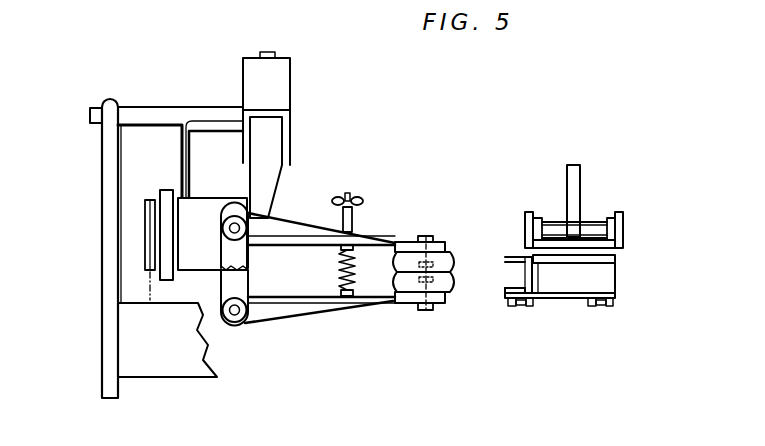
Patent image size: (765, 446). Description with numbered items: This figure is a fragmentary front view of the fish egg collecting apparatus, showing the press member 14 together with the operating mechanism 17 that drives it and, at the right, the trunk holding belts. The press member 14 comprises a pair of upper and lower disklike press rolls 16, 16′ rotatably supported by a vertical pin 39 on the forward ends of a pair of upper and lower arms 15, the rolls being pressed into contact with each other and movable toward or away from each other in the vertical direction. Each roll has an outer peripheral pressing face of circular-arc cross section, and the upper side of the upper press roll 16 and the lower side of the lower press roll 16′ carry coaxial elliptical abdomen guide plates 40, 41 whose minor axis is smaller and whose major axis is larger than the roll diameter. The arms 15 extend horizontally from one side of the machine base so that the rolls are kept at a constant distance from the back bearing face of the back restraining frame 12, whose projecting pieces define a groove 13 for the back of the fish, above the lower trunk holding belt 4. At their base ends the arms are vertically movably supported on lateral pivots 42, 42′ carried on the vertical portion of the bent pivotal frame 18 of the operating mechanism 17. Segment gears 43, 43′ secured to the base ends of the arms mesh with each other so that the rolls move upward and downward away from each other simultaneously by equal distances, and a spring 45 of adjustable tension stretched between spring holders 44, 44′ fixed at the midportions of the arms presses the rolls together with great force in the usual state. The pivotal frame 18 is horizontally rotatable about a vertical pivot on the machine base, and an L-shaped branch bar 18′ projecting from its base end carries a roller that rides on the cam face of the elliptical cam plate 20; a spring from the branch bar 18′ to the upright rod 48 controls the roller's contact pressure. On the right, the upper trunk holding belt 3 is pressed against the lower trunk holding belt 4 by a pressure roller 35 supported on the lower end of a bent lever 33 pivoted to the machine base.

The upper trunk holding endless conveyor belt 3 is at (608, 249).
The lower trunk holding endless conveyor belt 4 is at (575, 302).
The back restraining frame 12 is at (511, 250).
The groove 13 is at (520, 272).
The press member 14 is at (442, 274).
The upper arm 15 is at (299, 232).
The upper press roll 16 is at (454, 265).
The lower press roll 16′ is at (455, 293).
The operating mechanism 17 is at (160, 181).
The bent pivotal frame 18 is at (272, 138).
The L-shaped branch bar 18′ is at (186, 149).
The elliptical cam plate 20 is at (172, 283).
The bent lever 33 is at (575, 190).
The pressure roller 35 is at (623, 218).
The vertical pin 39 is at (425, 236).
The upper abdomen guide plate 40 is at (445, 251).
The lower abdomen guide plate 41 is at (447, 305).
The lateral pivot 42 is at (233, 214).
The lateral pivot 42′ is at (236, 324).
The segment gear 43 is at (249, 250).
The segment gear 43′ is at (252, 300).
The spring holder 44 is at (350, 218).
The spring holder 44′ is at (347, 305).
The spring 45 is at (356, 282).
The rod 48 is at (102, 302).